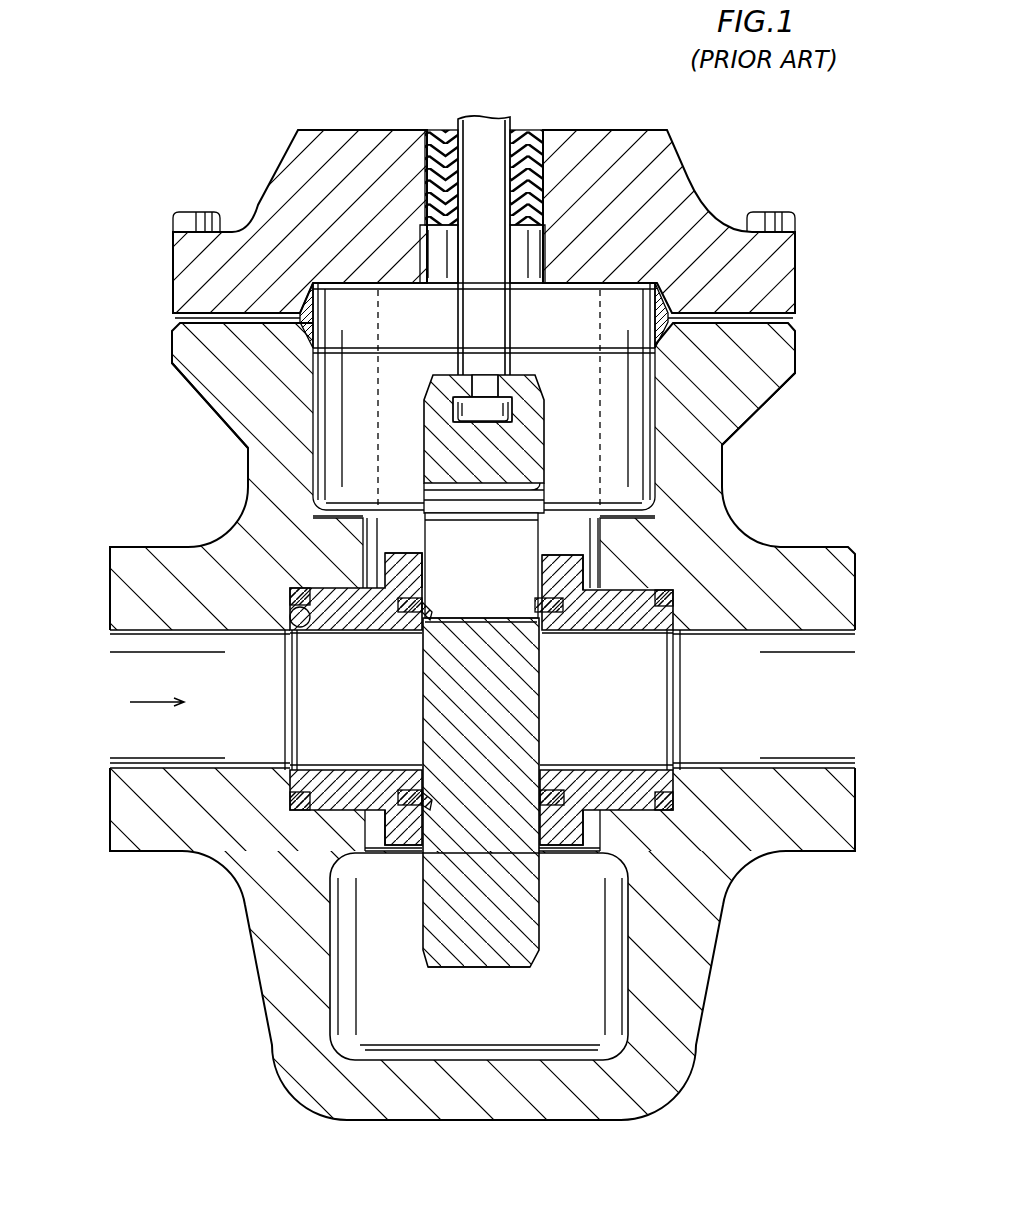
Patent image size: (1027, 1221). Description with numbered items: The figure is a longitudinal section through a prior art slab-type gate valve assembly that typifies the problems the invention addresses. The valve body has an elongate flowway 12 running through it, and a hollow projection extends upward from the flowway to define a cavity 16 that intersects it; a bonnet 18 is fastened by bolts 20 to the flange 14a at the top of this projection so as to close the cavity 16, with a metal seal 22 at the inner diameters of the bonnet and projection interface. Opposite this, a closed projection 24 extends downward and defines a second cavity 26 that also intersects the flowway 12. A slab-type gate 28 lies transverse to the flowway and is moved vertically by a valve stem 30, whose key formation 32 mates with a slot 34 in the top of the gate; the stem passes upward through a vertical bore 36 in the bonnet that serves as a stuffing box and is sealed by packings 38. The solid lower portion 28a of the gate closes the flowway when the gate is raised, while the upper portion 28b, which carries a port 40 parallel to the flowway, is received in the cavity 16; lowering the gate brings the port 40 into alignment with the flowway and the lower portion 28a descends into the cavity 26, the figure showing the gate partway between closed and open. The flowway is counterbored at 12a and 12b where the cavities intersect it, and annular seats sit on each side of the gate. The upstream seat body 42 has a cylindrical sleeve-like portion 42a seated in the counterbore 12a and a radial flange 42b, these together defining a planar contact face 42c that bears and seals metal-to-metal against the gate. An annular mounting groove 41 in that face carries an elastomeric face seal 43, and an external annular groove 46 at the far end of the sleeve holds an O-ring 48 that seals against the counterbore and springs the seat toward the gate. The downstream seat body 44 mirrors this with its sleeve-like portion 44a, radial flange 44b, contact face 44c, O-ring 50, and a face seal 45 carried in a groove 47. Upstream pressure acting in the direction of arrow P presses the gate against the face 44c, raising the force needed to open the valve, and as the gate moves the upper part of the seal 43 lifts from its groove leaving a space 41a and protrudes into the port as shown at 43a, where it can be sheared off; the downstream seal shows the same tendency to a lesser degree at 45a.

The flowway 12 is at (168, 768).
The counterbore 12a is at (243, 535).
The counterbore 12b is at (722, 872).
The flange 14a is at (185, 345).
The cavity 16 is at (652, 412).
The bonnet 18 is at (678, 165).
The bolts 20 is at (197, 212).
The metal seal 22 is at (320, 325).
The closed projection 24 is at (463, 1122).
The cavity 26 is at (532, 1062).
The slab-type gate 28 is at (483, 975).
The solid portion 28a is at (524, 738).
The upper portion 28b is at (542, 458).
The valve stem 30 is at (513, 130).
The key formation 32 is at (515, 406).
The slot 34 is at (458, 412).
The vertical bore 36 is at (425, 170).
The packings 38 is at (433, 140).
The port 40 is at (515, 495).
The annular mounting groove 41 is at (405, 790).
The space 41a is at (408, 598).
The upstream seat body 42 is at (384, 632).
The sleeve-like portion 42a is at (350, 790).
The annular flange 42b is at (400, 838).
The contact face 42c is at (405, 590).
The elastomeric face seal 43 is at (425, 800).
The protruding seal portion 43a is at (430, 618).
The downstream seat body 44 is at (628, 765).
The sleeve-like portion 44a is at (648, 632).
The radial flange 44b is at (570, 555).
The contact face 44c is at (540, 835).
The elastomeric face seal 45 is at (553, 790).
The protruding seal portion 45a is at (532, 610).
The external annular groove 46 is at (300, 626).
The annular groove 47 is at (593, 780).
The O-ring 48 is at (298, 802).
The O-ring 50 is at (673, 592).
The arrow P is at (157, 692).